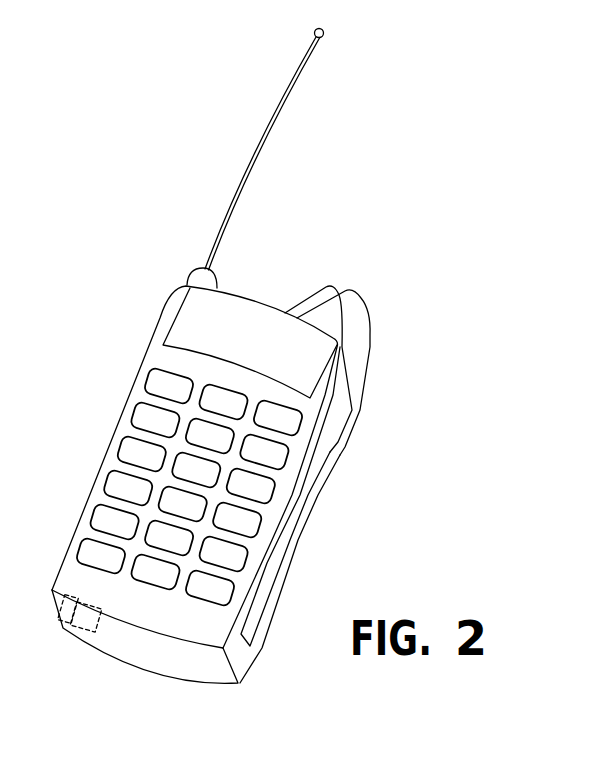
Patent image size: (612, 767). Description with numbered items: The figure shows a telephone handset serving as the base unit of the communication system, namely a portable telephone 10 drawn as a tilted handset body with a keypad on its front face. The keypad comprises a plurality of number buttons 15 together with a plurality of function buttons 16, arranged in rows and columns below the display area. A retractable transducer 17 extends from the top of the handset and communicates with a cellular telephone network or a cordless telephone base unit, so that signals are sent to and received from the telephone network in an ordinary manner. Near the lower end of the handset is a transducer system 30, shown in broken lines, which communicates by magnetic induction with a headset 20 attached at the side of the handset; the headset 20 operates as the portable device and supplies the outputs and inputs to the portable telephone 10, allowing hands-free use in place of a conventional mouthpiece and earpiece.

The portable telephone 10 is at (387, 235).
The number buttons 15 is at (172, 474).
The function buttons 16 is at (103, 519).
The retractable transducer 17 is at (281, 108).
The headset 20 is at (364, 326).
The transducer system 30 is at (63, 632).